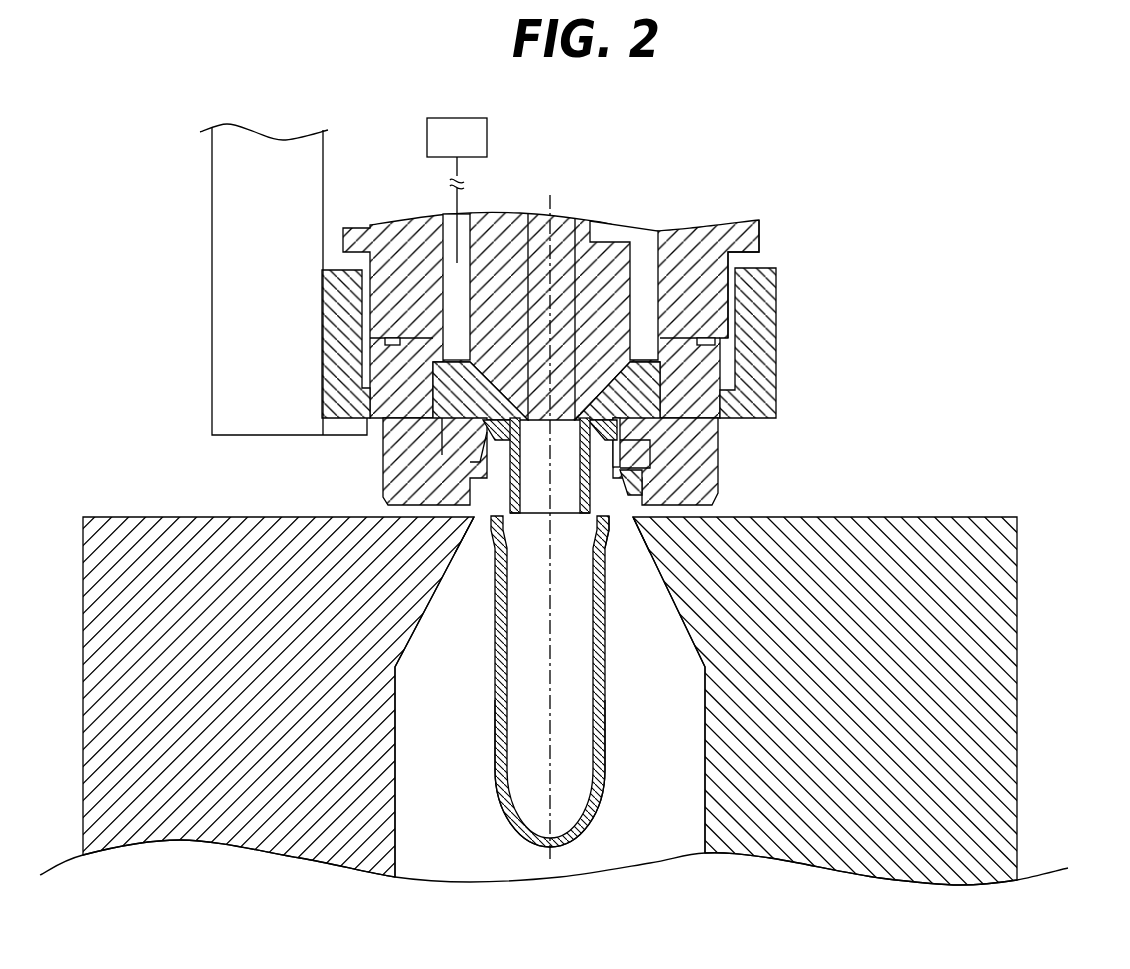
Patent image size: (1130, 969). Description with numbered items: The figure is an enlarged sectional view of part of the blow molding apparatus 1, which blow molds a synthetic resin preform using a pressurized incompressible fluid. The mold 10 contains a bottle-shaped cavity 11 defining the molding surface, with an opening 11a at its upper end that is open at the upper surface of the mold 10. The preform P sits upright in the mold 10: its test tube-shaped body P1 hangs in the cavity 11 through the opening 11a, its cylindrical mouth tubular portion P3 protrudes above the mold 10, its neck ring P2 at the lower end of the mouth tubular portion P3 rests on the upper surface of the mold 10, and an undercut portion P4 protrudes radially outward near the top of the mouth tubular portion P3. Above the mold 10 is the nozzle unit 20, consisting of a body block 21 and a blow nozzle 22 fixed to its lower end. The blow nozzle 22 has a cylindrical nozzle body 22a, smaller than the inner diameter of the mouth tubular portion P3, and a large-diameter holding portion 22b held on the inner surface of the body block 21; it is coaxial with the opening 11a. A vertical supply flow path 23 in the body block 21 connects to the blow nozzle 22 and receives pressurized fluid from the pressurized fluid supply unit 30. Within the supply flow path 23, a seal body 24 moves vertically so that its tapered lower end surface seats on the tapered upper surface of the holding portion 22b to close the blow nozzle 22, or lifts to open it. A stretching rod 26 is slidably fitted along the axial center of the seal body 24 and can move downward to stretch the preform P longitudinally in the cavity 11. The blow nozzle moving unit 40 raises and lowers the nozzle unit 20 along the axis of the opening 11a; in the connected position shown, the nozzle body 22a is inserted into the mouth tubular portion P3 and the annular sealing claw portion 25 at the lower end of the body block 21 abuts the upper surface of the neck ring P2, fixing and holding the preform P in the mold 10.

The blow molding apparatus 1 is at (970, 283).
The mold 10 is at (1019, 677).
The cavity 11 is at (401, 825).
The opening 11a is at (490, 522).
The nozzle unit 20 is at (762, 232).
The body block 21 is at (698, 230).
The blow nozzle 22 is at (590, 450).
The nozzle body 22a is at (580, 472).
The holding portion 22b is at (437, 372).
The supply flow path 23 is at (455, 307).
The seal body 24 is at (632, 302).
The sealing claw portion 25 is at (460, 488).
The stretching rod 26 is at (560, 233).
The pressurized fluid supply unit 30 is at (487, 132).
The blow nozzle moving unit 40 is at (237, 240).
The preform P is at (607, 643).
The body P1 is at (607, 732).
The neck ring P2 is at (625, 534).
The mouth tubular portion P3 is at (645, 487).
The undercut portion P4 is at (650, 465).